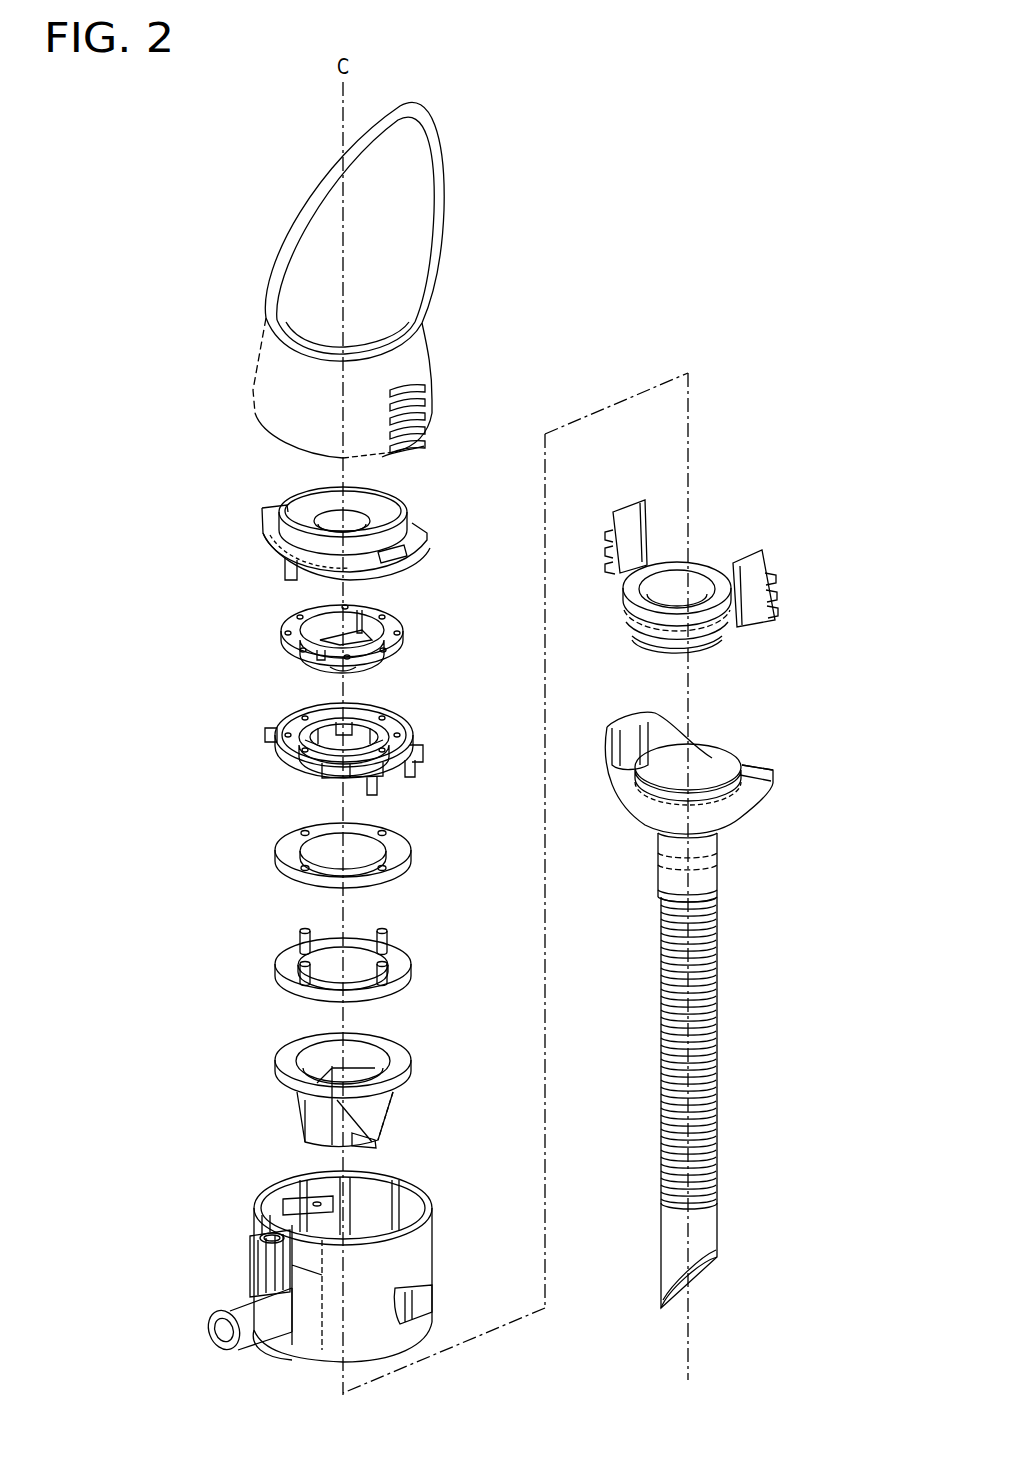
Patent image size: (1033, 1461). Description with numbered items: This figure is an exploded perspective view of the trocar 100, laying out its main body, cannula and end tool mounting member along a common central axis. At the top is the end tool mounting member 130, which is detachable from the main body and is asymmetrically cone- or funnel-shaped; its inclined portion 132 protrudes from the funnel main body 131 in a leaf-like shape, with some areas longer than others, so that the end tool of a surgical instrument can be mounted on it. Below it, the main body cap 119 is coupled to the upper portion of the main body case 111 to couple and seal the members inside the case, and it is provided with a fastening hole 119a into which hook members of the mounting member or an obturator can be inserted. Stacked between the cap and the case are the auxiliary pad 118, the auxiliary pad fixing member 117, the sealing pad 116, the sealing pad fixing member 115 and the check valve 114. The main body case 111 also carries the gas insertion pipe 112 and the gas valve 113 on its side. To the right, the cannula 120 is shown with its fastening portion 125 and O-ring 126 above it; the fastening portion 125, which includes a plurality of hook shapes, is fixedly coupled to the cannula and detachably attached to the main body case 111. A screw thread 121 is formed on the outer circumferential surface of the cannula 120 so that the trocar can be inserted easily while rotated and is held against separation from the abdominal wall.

The trocar 100 is at (771, 154).
The end tool mounting member 130 is at (248, 330).
The funnel main body 131 is at (408, 361).
The inclined portion 132 is at (416, 188).
The main body cap 119 is at (255, 522).
The fastening hole 119a is at (407, 545).
The auxiliary pad 118 is at (275, 632).
The auxiliary pad fixing member 117 is at (262, 735).
The sealing pad 116 is at (268, 850).
The sealing pad fixing member 115 is at (268, 965).
The check valve 114 is at (268, 1060).
The main body case 111 is at (250, 1208).
The gas insertion pipe 112 is at (245, 1312).
The gas valve 113 is at (258, 1264).
The fastening portion 125 is at (775, 550).
The O-ring 126 is at (697, 627).
The cannula 120 is at (722, 869).
The screw thread 121 is at (712, 1084).